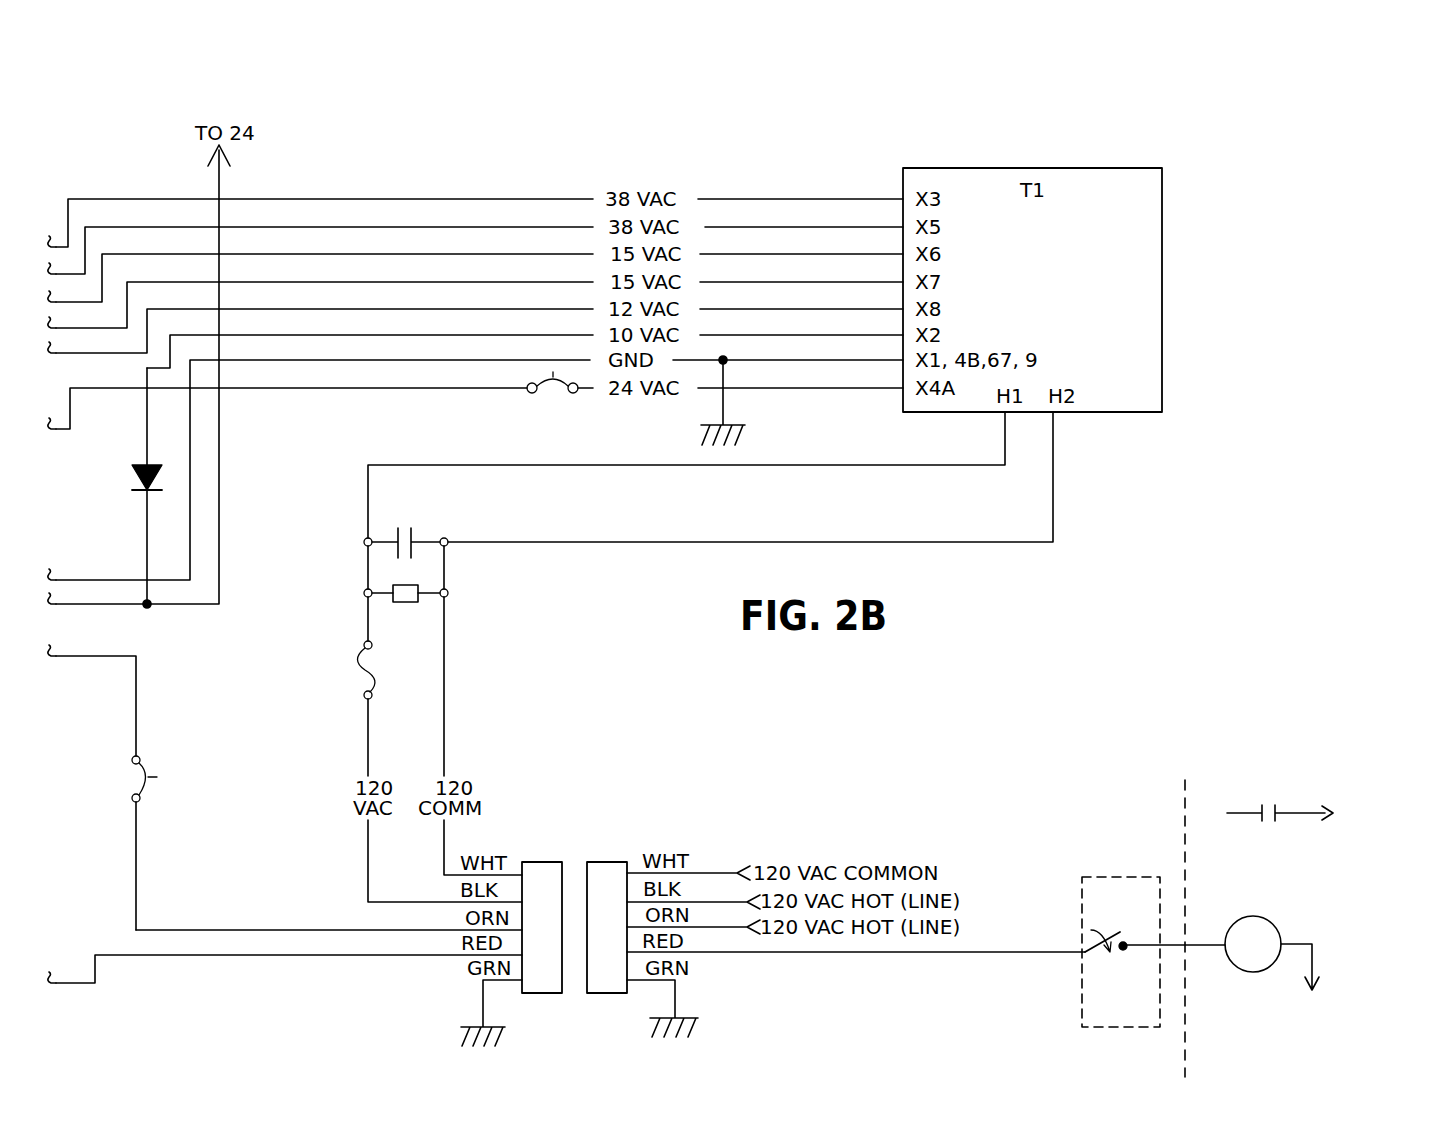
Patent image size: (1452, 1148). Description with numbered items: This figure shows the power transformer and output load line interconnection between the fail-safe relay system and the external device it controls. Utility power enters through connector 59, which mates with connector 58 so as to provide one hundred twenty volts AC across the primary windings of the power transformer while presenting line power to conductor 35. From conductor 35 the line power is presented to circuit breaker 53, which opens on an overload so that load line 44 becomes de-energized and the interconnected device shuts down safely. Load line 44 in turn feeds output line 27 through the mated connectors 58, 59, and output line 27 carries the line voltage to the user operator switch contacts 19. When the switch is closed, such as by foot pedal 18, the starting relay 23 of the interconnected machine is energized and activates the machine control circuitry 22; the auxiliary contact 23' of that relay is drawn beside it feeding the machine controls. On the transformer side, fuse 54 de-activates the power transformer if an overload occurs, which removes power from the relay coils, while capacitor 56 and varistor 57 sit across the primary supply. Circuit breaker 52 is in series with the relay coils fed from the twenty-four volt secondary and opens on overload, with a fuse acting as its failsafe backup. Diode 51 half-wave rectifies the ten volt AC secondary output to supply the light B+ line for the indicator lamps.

The foot pedal 18 is at (1118, 970).
The user operator switch contacts 19 is at (1108, 928).
The machine control circuitry 22 is at (1396, 805).
The starting relay 23 is at (1245, 954).
The contactor auxiliary contact 23' is at (1280, 783).
The output line 27 is at (787, 955).
The line conductor 35 is at (292, 930).
The load line 44 is at (254, 957).
The diode 51 is at (151, 462).
The circuit breaker 52 is at (553, 380).
The circuit breaker 53 is at (145, 793).
The fuse 54 is at (356, 663).
The capacitor 56 is at (412, 540).
The varistor 57 is at (400, 603).
The connector 58 is at (540, 862).
The connector 59 is at (604, 862).